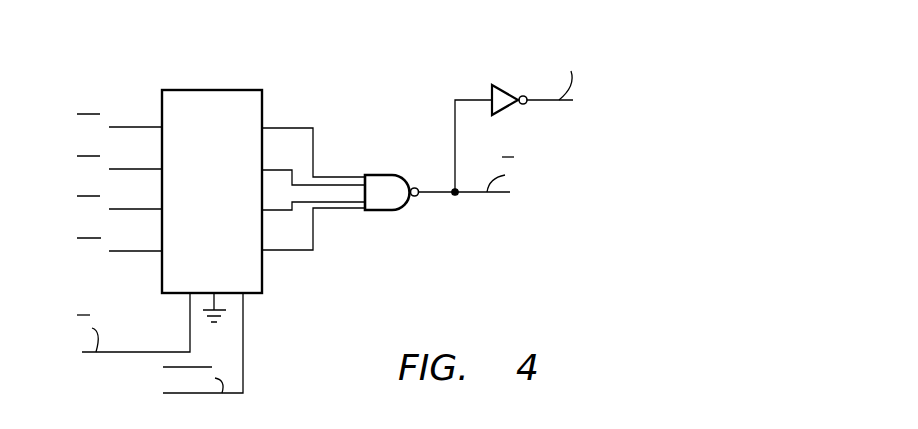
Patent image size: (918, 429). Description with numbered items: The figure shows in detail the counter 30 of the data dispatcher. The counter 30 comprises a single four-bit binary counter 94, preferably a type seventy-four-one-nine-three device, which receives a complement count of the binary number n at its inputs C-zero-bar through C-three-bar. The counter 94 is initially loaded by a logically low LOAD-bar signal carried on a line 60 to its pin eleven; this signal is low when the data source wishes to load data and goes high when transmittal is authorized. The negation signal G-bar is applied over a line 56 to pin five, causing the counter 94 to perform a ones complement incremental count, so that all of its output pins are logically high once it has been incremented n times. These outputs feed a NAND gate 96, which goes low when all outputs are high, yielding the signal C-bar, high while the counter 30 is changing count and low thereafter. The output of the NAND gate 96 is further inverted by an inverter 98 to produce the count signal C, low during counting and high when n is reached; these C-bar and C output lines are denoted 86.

The four-bit binary counter 94 is at (263, 108).
The NAND gate 96 is at (393, 212).
The inverter 98 is at (527, 63).
The output lines C and C-bar 86 is at (573, 100).
The line 56 is at (124, 352).
The line 60 is at (167, 393).
The counter 30 is at (332, 343).